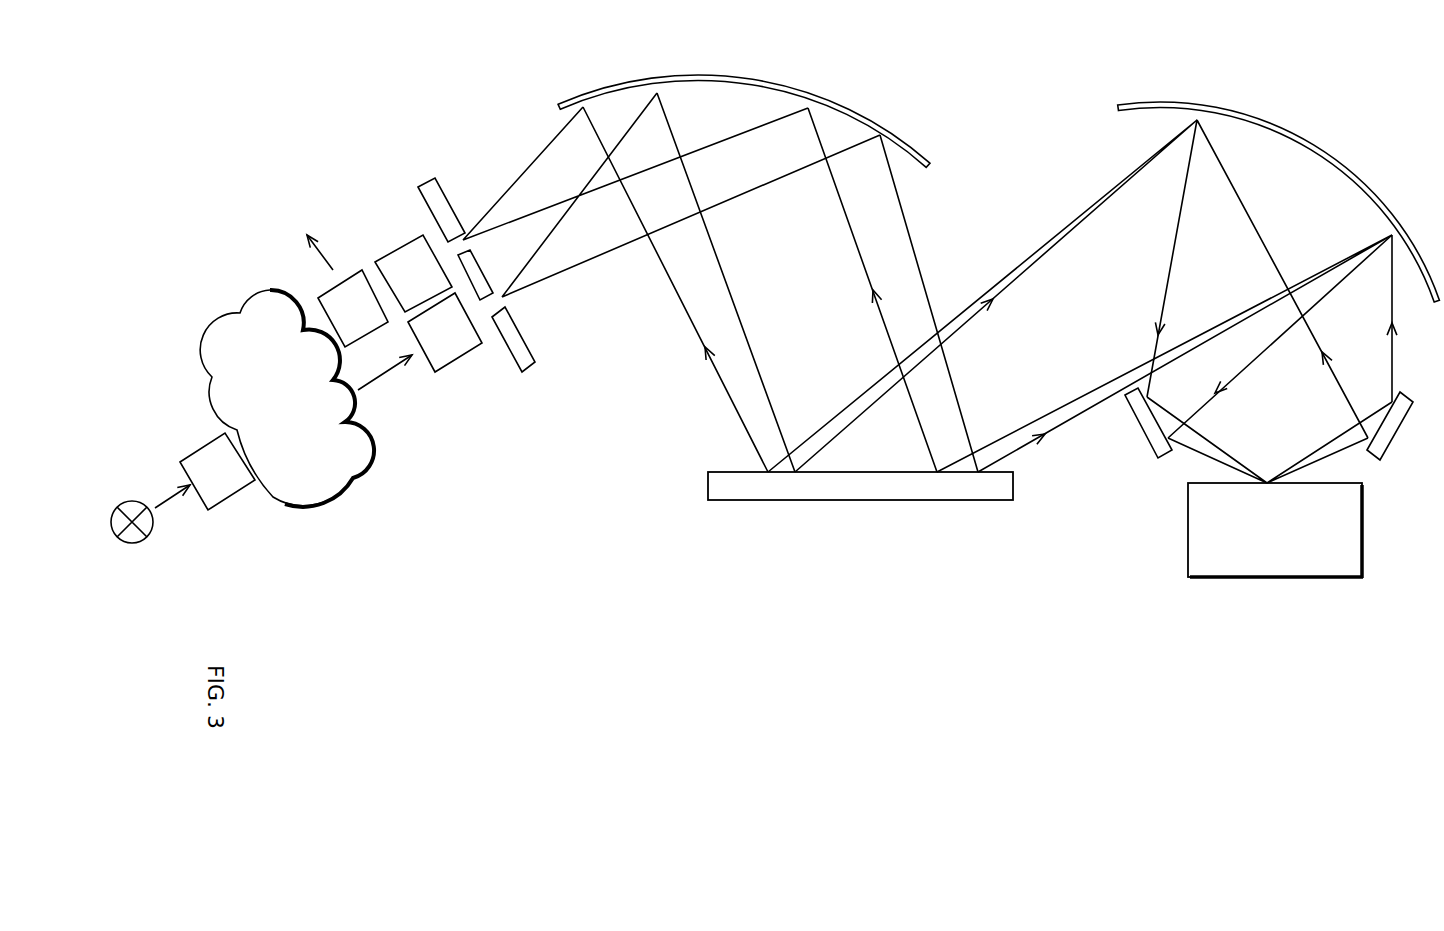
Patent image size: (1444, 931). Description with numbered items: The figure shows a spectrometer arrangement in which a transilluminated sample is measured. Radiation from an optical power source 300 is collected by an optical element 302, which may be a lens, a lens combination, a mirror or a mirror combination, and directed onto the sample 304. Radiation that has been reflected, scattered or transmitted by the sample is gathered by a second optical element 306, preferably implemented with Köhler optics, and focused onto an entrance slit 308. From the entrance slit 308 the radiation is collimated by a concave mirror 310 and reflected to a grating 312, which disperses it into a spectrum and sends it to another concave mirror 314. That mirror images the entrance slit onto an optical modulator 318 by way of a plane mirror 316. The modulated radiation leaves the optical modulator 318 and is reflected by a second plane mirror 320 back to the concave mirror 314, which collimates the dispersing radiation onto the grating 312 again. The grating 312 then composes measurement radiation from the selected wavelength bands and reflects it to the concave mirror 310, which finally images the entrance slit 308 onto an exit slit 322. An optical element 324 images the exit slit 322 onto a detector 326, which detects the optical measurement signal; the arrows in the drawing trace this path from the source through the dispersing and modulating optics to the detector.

The optical power source 300 is at (155, 528).
The optical element 302 is at (203, 447).
The sample 304 is at (202, 333).
The optical element 306 is at (453, 360).
The entrance slit 308 is at (540, 321).
The concave mirror 310 is at (747, 83).
The grating 312 is at (863, 503).
The concave mirror 314 is at (1275, 128).
The plane mirror 316 is at (1143, 438).
The optical modulator 318 is at (1362, 518).
The plane mirror 320 is at (1382, 453).
The exit slit 322 is at (478, 172).
The optical element 324 is at (413, 233).
The detector 326 is at (352, 270).